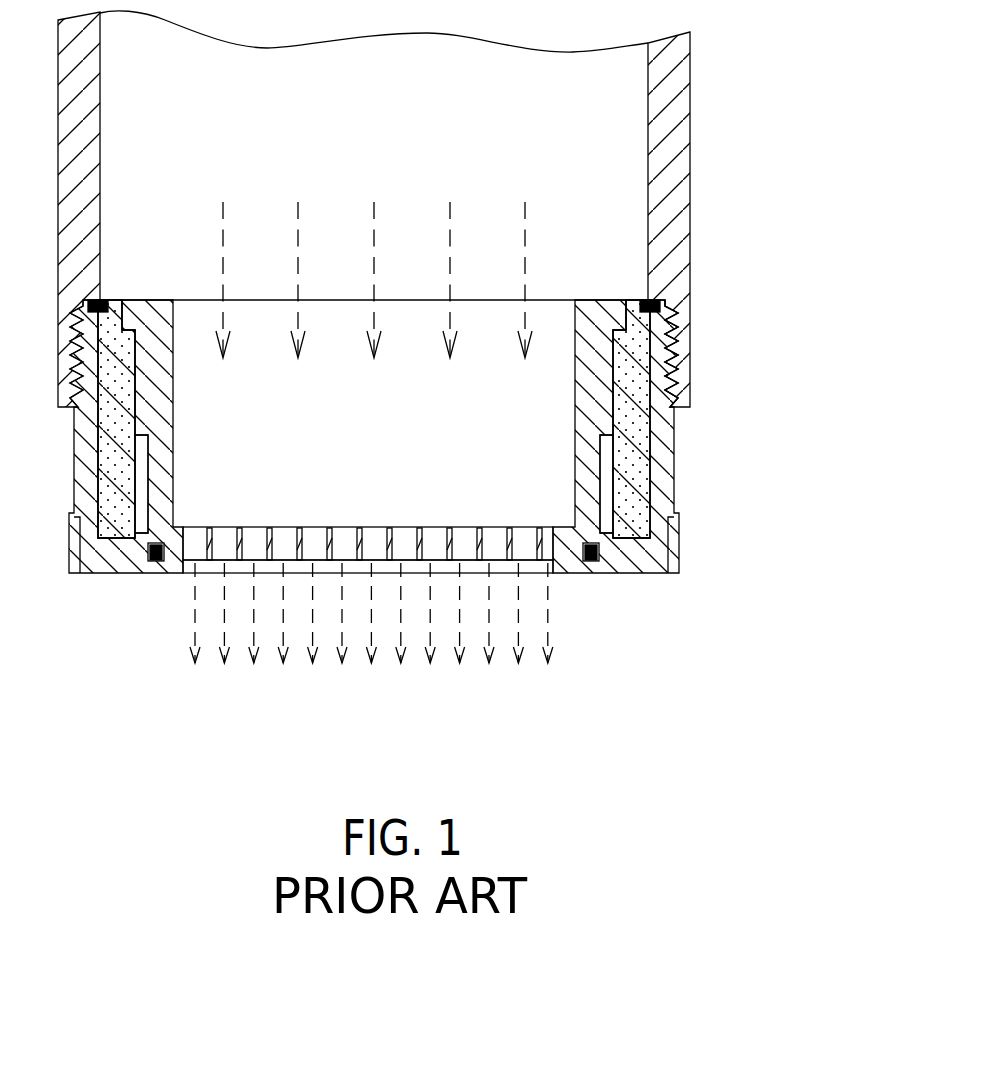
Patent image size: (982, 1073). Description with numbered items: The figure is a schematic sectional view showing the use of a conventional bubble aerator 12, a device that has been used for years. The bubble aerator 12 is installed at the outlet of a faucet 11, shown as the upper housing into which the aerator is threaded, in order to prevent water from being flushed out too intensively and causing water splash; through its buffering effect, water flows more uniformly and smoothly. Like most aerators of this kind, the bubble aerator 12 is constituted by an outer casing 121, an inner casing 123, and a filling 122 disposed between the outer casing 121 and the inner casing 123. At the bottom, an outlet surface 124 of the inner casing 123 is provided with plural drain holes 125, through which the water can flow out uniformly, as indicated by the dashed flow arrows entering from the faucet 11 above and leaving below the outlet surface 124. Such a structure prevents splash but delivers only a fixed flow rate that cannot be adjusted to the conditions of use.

The faucet 11 is at (693, 155).
The bubble aerator 12 is at (672, 444).
The outer casing 121 is at (662, 477).
The filling 122 is at (632, 522).
The inner casing 123 is at (573, 427).
The outlet surface 124 is at (284, 527).
The drain holes 125 is at (460, 552).